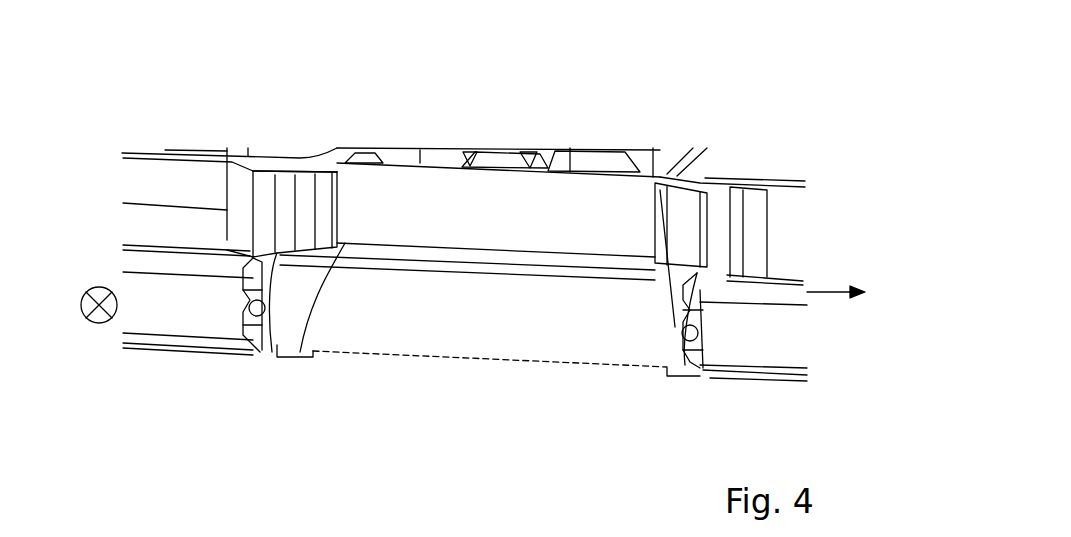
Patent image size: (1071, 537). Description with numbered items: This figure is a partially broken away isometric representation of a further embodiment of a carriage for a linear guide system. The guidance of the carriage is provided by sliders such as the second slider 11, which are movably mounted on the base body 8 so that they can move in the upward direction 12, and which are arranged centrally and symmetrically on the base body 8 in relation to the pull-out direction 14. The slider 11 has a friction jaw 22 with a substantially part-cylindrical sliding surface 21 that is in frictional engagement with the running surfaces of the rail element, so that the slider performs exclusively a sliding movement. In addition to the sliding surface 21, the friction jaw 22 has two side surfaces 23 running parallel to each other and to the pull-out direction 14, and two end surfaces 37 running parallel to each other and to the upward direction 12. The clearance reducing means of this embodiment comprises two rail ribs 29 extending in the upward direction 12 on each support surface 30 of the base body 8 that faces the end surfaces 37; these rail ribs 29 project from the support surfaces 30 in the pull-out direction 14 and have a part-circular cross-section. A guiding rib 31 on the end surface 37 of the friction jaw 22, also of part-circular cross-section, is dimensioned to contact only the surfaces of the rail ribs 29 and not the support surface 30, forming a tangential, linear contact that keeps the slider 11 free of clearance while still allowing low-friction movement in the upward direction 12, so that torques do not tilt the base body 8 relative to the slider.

The base body 8 is at (430, 200).
The second slider 11 is at (543, 337).
The upward direction 12 is at (103, 273).
The pull-out direction 14 is at (830, 282).
The sliding surface 21 is at (333, 320).
The friction jaw 22 is at (468, 327).
The side surfaces 23 is at (515, 237).
The rail ribs 29 is at (808, 413).
The support surface 30 is at (255, 345).
The guiding rib 31 is at (345, 243).
The end surfaces 37 is at (262, 277).